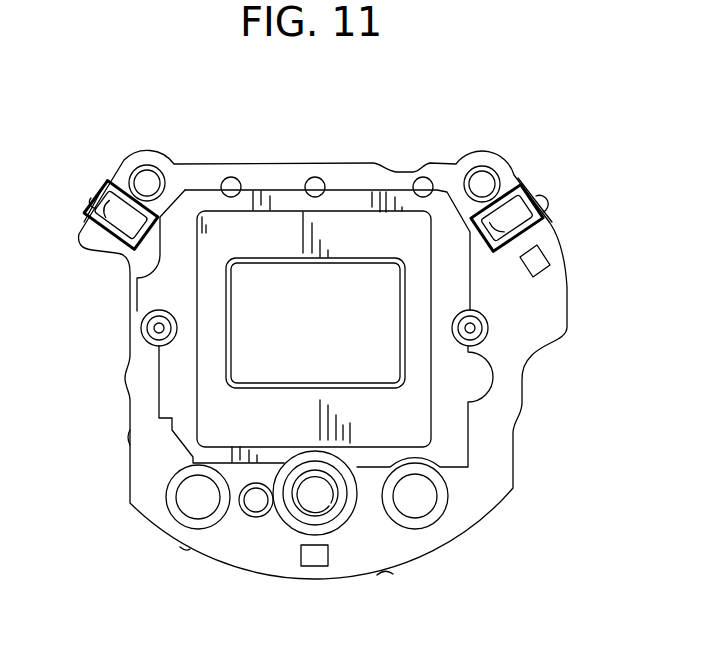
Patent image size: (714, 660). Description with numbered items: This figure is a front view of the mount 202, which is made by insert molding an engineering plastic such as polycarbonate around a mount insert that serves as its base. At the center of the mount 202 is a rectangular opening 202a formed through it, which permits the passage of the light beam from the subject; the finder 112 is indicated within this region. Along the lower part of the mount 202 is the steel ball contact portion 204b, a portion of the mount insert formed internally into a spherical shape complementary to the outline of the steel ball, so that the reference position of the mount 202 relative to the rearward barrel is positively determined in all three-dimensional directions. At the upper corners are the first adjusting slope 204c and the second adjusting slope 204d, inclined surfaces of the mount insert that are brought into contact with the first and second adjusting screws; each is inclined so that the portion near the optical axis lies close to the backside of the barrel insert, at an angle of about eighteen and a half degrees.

The mount 202 is at (370, 147).
The rectangular opening 202a is at (282, 272).
The finder 112 is at (314, 331).
The steel ball contact portion 204b is at (318, 498).
The first adjusting slope 204c is at (507, 217).
The second adjusting slope 204d is at (123, 218).